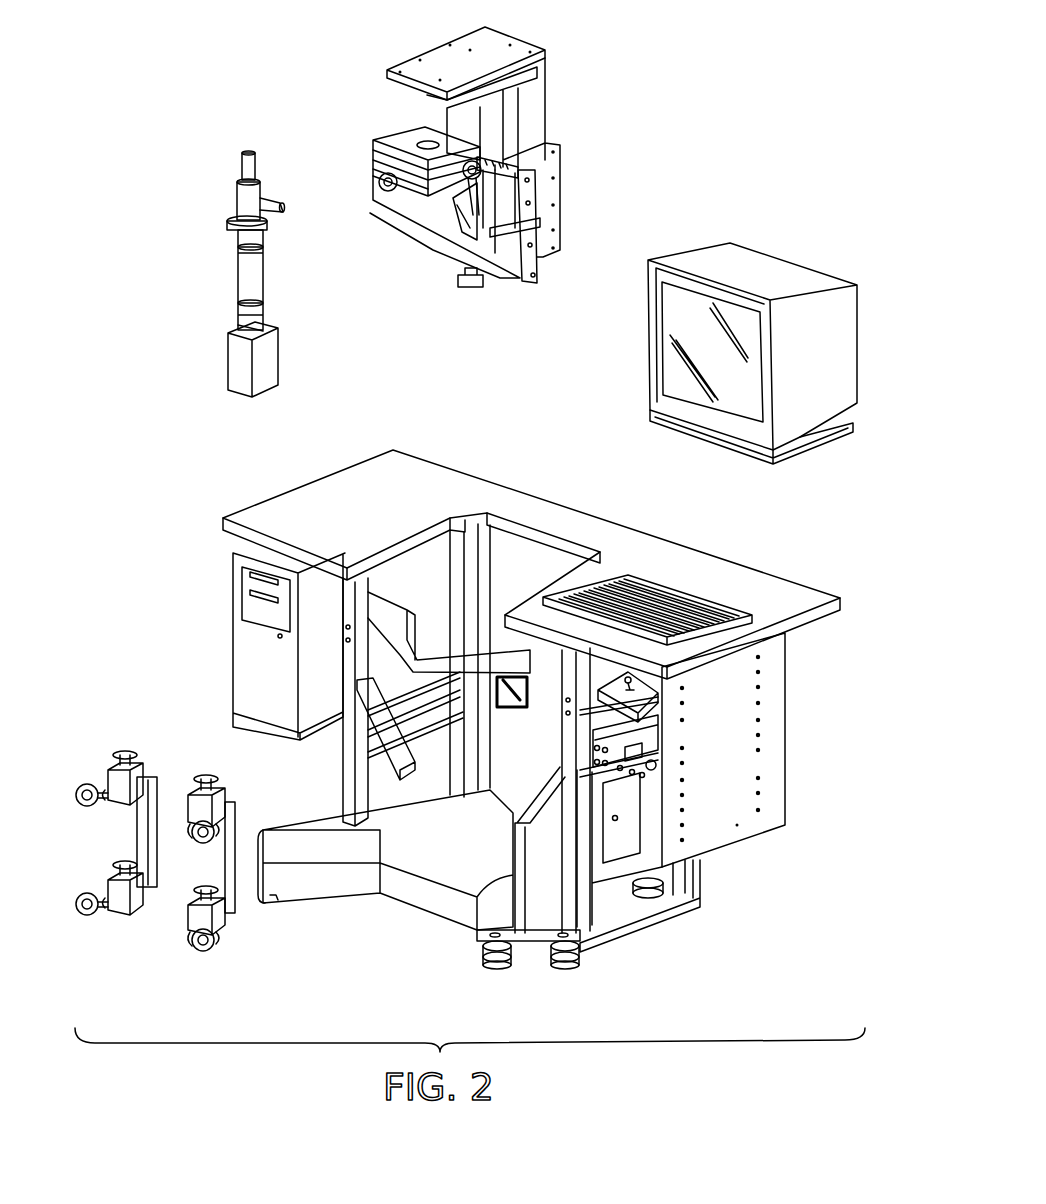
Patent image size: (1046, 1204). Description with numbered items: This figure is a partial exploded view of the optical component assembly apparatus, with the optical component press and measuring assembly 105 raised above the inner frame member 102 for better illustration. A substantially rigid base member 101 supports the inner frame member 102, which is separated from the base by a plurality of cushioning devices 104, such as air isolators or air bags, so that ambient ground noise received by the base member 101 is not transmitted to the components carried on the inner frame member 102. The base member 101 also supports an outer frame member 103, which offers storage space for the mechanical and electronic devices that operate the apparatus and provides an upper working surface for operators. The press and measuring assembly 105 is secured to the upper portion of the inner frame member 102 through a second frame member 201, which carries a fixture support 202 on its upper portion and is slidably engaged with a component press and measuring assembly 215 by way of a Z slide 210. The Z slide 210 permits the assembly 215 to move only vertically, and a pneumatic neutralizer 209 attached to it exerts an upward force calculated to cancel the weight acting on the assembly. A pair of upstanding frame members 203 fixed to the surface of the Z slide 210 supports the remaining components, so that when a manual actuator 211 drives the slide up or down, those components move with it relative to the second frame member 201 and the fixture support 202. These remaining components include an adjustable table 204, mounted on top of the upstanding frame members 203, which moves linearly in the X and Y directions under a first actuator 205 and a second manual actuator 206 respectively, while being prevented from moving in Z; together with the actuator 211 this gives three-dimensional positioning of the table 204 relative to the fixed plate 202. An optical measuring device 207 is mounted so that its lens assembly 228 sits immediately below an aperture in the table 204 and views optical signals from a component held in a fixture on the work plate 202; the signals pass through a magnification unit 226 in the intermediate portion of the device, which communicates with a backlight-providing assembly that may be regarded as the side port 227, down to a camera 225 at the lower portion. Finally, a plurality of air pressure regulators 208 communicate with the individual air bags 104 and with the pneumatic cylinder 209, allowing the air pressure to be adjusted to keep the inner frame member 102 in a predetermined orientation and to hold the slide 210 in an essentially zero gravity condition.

The substantially rigid base member 101 is at (695, 898).
The inner frame member 102 is at (518, 873).
The outer frame member 103 is at (760, 580).
The cushioning devices 104 is at (588, 952).
The optical component press and measuring assembly 105 is at (496, 178).
The second frame member 201 is at (542, 115).
The fixture support 202 is at (540, 63).
The upstanding frame members 203 is at (460, 233).
The adjustable table 204 is at (398, 133).
The first actuator 205 is at (437, 220).
The second manual actuator 206 is at (373, 190).
The optical measuring device 207 is at (270, 232).
The air pressure regulators 208 is at (233, 960).
The pneumatic neutralizer 209 is at (507, 192).
The Z slide 210 is at (537, 277).
The manual actuator 211 is at (467, 290).
The component press and measuring assembly 215 is at (351, 308).
The camera 225 is at (270, 352).
The magnification unit 226 is at (243, 275).
The side port 227 is at (265, 200).
The lens assembly 228 is at (240, 163).